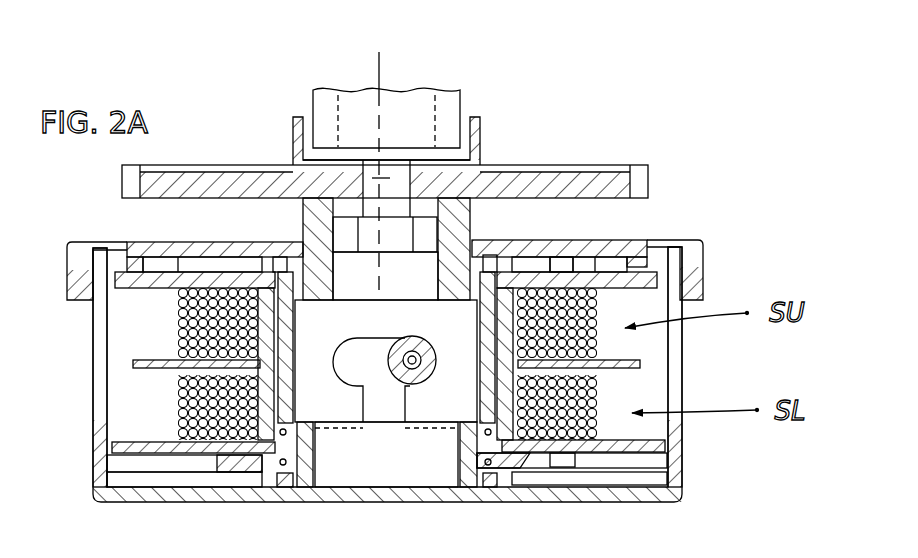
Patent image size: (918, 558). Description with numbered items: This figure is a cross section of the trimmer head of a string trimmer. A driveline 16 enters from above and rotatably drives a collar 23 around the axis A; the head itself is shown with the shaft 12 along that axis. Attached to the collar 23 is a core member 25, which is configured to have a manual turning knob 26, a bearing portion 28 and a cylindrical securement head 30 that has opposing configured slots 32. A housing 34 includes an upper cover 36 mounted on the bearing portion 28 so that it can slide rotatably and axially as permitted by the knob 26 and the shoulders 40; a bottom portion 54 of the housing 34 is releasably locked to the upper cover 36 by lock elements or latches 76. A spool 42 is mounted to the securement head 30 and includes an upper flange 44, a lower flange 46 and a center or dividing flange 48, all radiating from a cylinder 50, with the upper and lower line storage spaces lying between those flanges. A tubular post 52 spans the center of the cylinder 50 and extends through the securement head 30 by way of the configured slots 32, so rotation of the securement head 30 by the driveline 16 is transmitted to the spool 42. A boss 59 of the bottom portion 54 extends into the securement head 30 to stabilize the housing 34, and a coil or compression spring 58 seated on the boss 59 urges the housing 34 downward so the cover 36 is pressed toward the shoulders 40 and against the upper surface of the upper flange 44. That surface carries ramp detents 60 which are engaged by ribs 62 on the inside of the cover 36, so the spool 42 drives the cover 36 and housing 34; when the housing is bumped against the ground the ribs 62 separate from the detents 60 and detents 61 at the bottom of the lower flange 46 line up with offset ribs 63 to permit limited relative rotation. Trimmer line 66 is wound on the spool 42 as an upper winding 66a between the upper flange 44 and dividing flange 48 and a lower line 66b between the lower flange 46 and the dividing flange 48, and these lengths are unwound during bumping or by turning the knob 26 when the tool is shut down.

The axis A is at (385, 70).
The shaft 12 is at (311, 103).
The driveline 16 is at (437, 146).
The collar 23 is at (483, 134).
The core member 25 is at (476, 200).
The manual turning knob 26 is at (637, 179).
The bearing portion 28 is at (472, 231).
The securement head 30 is at (290, 376).
The configured slots 32 is at (386, 418).
The housing 34 is at (126, 504).
The upper cover 36 is at (148, 241).
The shoulders 40 is at (282, 262).
The spool 42 is at (125, 459).
The upper flange 44 is at (122, 293).
The lower flange 46 is at (140, 440).
The center or dividing flange 48 is at (146, 361).
The cylinder 50 is at (286, 323).
The tubular post 52 is at (371, 339).
The bottom portion 54 is at (681, 455).
The coil or compression spring 58 is at (274, 480).
The boss 59 is at (314, 444).
The ramp detents 60 is at (561, 262).
The detents 61 is at (220, 457).
The ribs 62 is at (215, 262).
The ribs 63 is at (162, 481).
The trimmer line 66 is at (424, 339).
The upper winding 66a is at (188, 334).
The lower line 66b is at (183, 412).
The lock elements or latches 76 is at (92, 258).